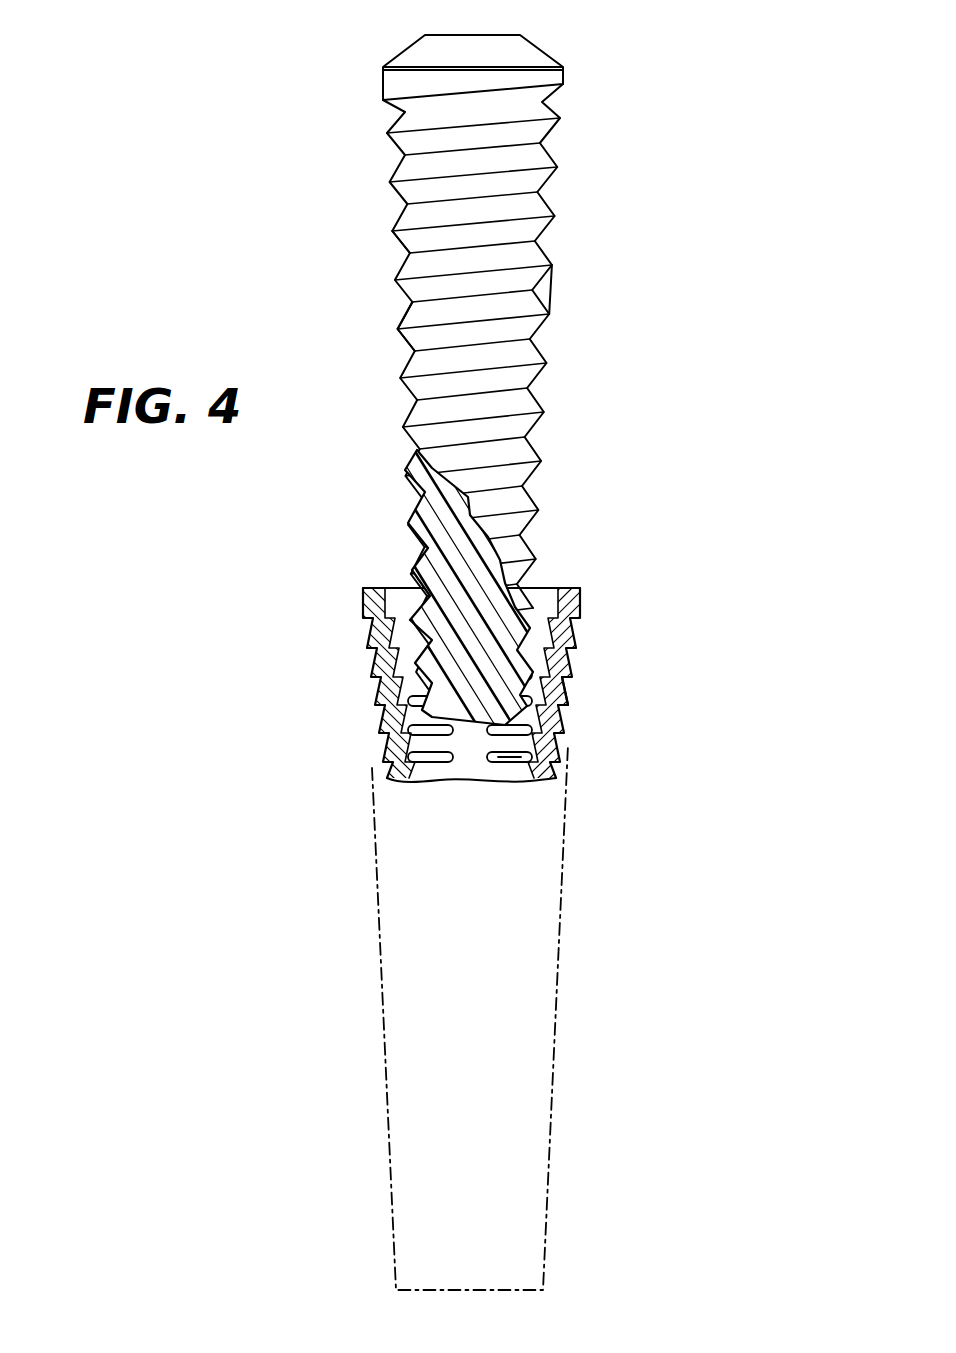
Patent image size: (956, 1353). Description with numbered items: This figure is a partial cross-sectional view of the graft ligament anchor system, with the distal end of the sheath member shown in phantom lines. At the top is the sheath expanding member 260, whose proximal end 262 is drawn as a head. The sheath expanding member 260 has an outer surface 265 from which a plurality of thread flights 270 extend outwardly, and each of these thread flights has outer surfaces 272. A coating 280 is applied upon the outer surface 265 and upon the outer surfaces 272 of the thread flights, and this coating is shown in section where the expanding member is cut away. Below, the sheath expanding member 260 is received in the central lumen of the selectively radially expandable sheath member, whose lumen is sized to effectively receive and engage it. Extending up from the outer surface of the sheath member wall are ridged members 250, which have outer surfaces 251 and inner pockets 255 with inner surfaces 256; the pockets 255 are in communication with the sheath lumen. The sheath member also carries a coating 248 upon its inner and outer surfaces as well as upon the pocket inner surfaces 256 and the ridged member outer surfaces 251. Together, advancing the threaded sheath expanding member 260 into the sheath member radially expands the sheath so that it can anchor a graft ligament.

The sheath expanding member 260 is at (480, 349).
The proximal end 262 is at (533, 55).
The outer surface 265 is at (535, 180).
The thread flights 270 is at (547, 312).
The outer surfaces 272 is at (414, 340).
The coating 280 is at (410, 525).
The coating 248 is at (472, 865).
The ridged members 250 is at (578, 679).
The outer surfaces 251 is at (570, 693).
The inner pockets 255 is at (517, 759).
The inner surfaces 256 is at (498, 760).